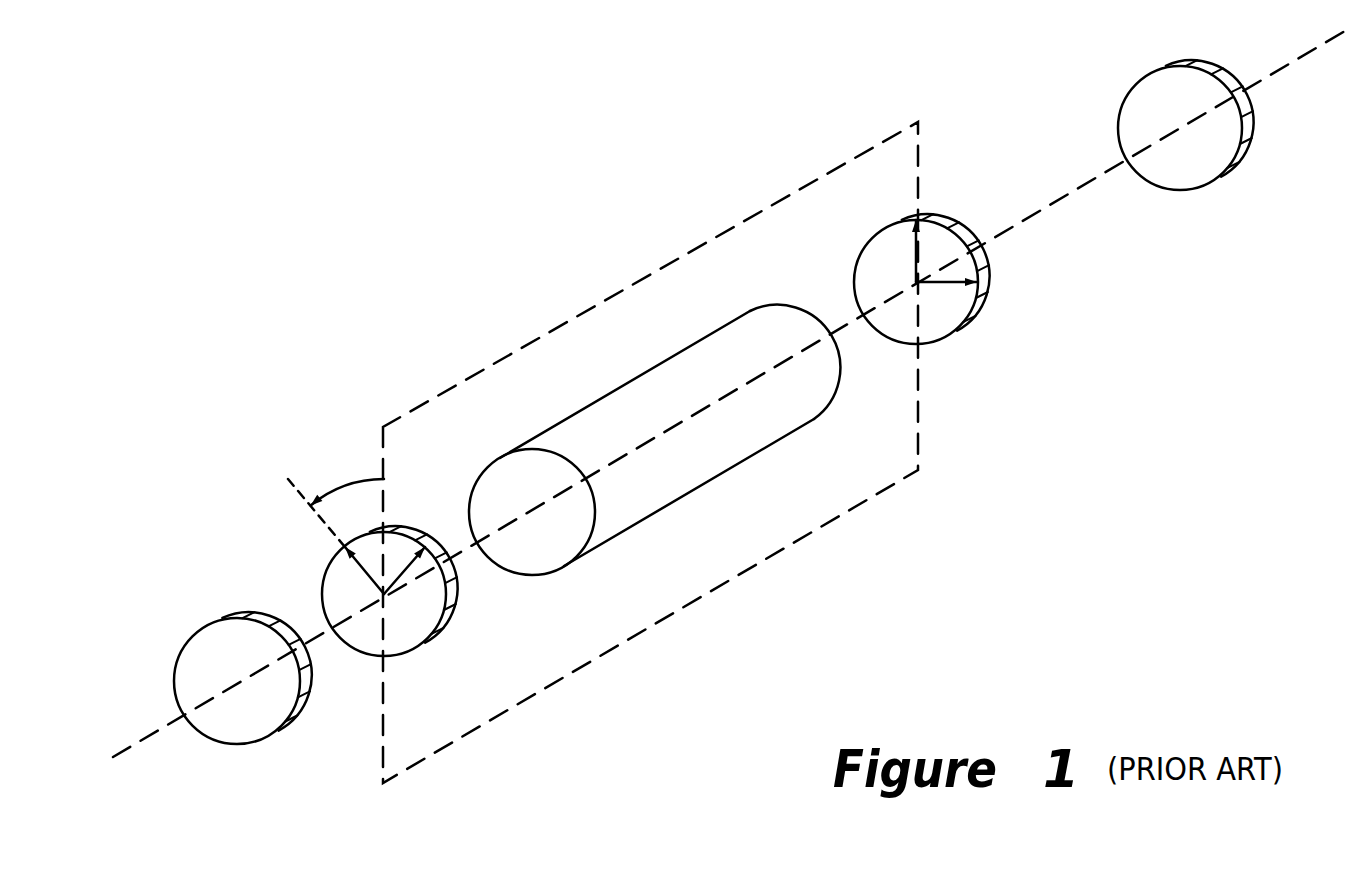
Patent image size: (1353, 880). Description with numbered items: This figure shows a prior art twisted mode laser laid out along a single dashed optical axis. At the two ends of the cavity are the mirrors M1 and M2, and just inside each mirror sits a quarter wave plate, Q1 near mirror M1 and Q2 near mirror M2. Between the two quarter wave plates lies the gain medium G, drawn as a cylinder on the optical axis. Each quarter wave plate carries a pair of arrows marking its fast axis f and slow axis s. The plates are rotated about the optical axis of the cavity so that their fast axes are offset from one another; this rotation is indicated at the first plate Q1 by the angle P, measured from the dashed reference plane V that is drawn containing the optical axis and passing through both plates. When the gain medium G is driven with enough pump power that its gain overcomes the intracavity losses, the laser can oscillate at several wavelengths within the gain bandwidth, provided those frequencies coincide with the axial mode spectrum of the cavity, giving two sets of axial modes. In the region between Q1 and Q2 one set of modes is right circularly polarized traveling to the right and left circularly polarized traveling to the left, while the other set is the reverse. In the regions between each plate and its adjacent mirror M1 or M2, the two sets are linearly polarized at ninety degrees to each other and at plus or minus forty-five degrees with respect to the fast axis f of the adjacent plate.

The mirror M1 is at (249, 688).
The mirror M2 is at (1194, 143).
The quarter wave plate Q1 is at (391, 603).
The quarter wave plate Q2 is at (927, 297).
The gain medium G is at (654, 440).
The reference plane V is at (650, 428).
The angle of fast-axis offset P is at (336, 494).
The fast axis f is at (631, 409).
The slow axis s is at (680, 438).